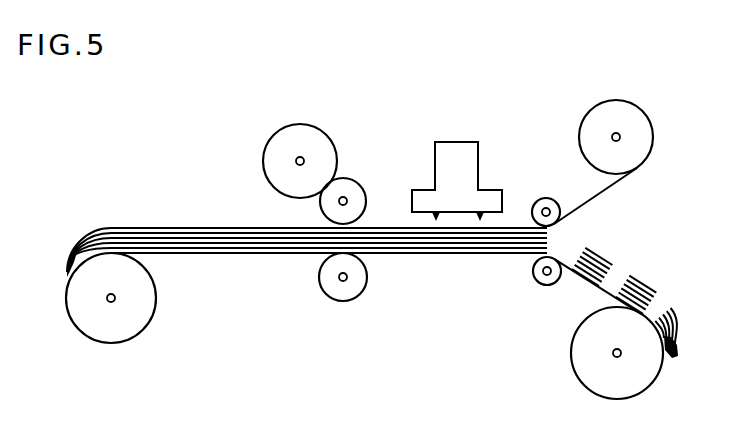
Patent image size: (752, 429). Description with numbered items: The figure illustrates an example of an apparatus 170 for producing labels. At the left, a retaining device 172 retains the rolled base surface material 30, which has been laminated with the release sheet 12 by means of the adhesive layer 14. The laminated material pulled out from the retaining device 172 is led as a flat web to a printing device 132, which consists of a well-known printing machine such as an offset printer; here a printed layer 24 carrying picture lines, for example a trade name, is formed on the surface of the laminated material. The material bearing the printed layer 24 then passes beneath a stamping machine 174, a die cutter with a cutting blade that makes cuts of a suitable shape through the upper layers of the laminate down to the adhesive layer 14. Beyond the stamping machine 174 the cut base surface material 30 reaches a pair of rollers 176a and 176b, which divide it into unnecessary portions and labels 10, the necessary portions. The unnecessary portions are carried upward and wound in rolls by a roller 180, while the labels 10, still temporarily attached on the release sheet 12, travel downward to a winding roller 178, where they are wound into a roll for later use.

The labels 10 is at (605, 258).
The release sheet 12 is at (188, 252).
The adhesive layer 14 is at (152, 243).
The printed layer 24 is at (307, 222).
The base surface material 30 is at (122, 235).
The printing device 132 is at (340, 172).
The apparatus 170 is at (586, 72).
The retaining device 172 is at (114, 302).
The stamping machine 174 is at (462, 140).
The roller 176a is at (543, 197).
The roller 176b is at (537, 283).
The winding roller 178 is at (613, 354).
The roller 180 is at (612, 133).